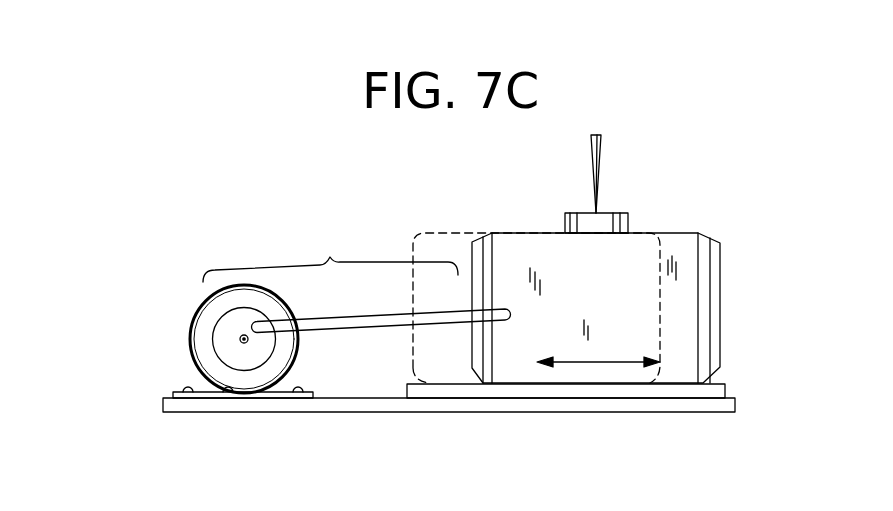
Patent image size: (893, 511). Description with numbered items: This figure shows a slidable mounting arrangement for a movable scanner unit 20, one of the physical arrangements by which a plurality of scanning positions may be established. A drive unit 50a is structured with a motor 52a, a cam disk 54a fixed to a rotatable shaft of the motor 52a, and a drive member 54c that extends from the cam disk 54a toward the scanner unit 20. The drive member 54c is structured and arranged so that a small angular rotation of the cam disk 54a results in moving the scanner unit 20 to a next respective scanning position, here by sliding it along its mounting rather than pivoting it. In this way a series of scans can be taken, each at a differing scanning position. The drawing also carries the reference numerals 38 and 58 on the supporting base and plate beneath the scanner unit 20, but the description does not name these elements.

The scanner unit 20 is at (632, 195).
The base plate 38 is at (247, 408).
The mounting plate 58 is at (577, 392).
The motor 52a is at (200, 327).
The cam disk 54a is at (222, 343).
The drive member 54c is at (380, 326).
The drive unit 50a is at (355, 262).